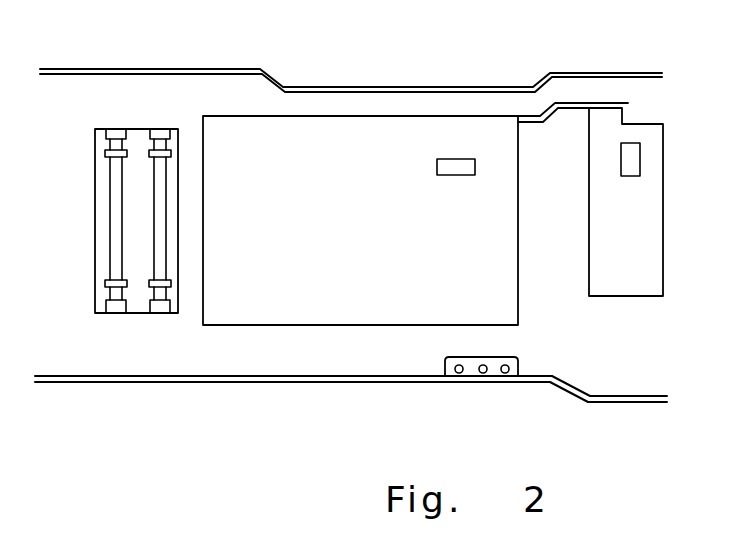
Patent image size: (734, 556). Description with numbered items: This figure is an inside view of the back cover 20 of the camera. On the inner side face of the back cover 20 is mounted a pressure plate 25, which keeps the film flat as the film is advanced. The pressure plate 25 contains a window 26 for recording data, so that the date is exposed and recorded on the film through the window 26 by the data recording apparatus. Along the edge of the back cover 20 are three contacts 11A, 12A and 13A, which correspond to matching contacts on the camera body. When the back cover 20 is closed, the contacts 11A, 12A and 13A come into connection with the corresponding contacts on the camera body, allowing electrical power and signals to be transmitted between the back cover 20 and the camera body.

The pressure plate 25 is at (272, 123).
The window 26 is at (451, 162).
The back cover 20 is at (306, 366).
The contact 11A is at (505, 373).
The contact 12A is at (483, 373).
The contact 13A is at (459, 373).